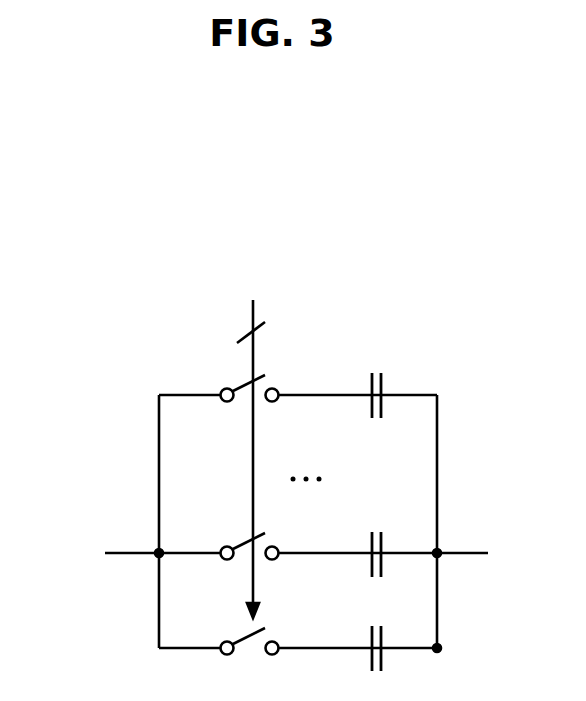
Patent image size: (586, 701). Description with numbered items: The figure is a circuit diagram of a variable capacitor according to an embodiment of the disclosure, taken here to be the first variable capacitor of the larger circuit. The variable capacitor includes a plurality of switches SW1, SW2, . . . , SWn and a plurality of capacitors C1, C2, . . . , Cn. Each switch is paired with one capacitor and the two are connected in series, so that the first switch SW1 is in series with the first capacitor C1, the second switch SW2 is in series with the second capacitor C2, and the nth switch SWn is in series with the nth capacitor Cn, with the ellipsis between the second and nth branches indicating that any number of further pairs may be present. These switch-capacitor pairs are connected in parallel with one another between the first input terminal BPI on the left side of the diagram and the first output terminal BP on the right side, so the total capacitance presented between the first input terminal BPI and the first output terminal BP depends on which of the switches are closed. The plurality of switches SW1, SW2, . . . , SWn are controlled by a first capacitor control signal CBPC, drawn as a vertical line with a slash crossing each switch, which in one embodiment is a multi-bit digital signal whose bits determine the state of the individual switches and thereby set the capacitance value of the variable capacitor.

The first capacitor control signal CBPC is at (249, 445).
The switch SWn is at (236, 385).
The switch SW2 is at (236, 543).
The switch SW1 is at (236, 639).
The capacitor Cn is at (375, 382).
The capacitor C2 is at (375, 545).
The capacitor C1 is at (375, 638).
The first input terminal BPI is at (114, 553).
The first output terminal BP is at (481, 553).